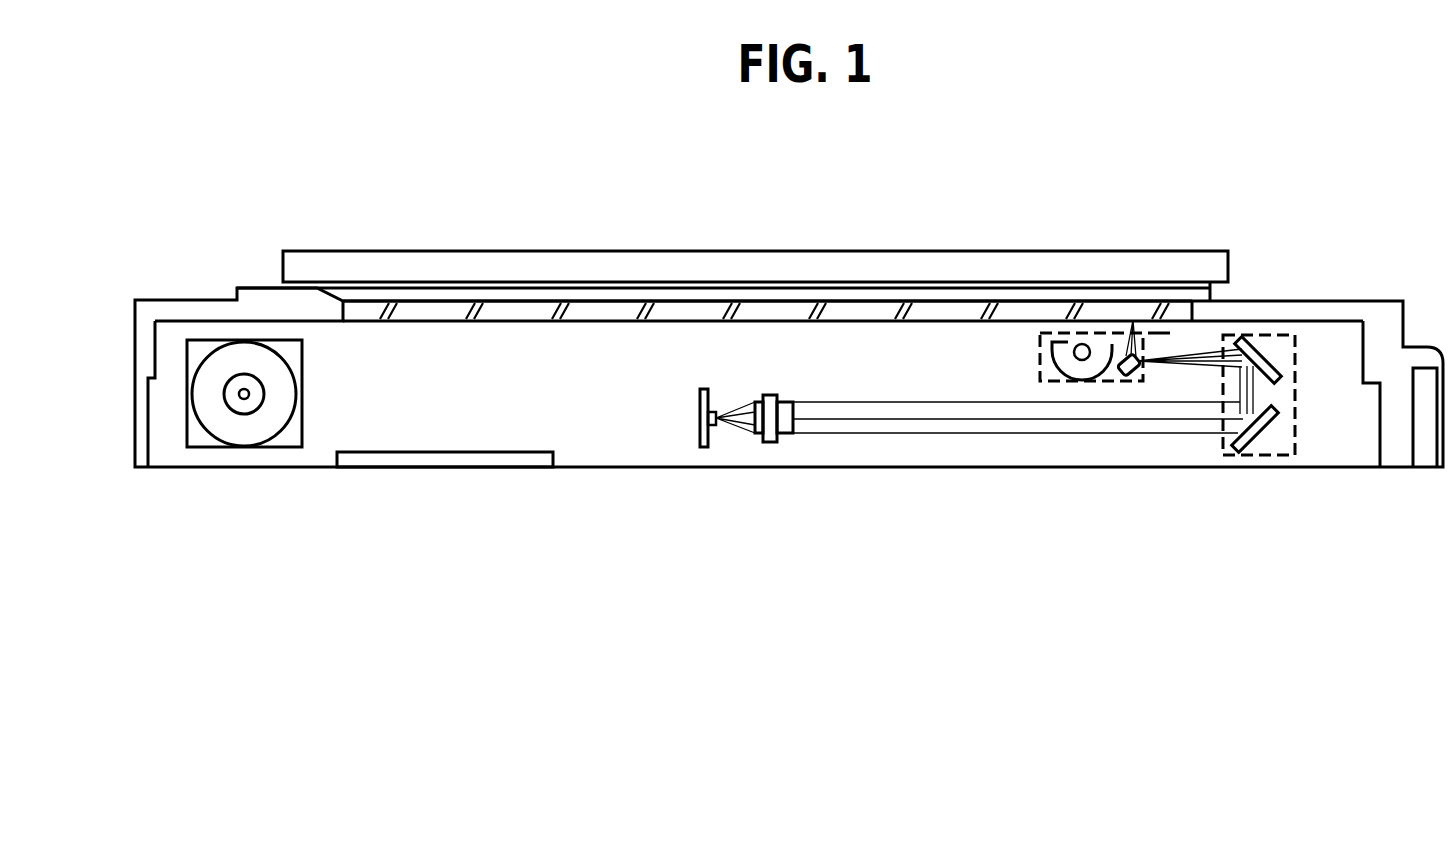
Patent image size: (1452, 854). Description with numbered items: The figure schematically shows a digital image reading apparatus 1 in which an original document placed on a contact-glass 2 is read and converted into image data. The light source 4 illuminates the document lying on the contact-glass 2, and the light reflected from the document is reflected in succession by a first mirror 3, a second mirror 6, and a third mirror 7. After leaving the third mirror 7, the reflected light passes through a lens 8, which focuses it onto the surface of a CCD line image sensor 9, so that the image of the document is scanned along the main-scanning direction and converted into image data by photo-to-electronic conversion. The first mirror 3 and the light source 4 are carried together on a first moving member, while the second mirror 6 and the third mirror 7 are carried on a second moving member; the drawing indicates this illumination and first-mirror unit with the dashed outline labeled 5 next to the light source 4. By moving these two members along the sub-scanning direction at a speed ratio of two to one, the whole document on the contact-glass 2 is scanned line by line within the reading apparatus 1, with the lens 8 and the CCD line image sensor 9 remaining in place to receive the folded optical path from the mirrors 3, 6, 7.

The reading apparatus 1 is at (1378, 351).
The contact-glass 2 is at (452, 322).
The first mirror 3 is at (1131, 377).
The light source 4 is at (1062, 363).
The illumination unit 5 is at (1040, 352).
The second mirror 6 is at (1267, 357).
The third mirror 7 is at (1267, 428).
The lens 8 is at (770, 395).
The CCD line image sensor 9 is at (713, 412).